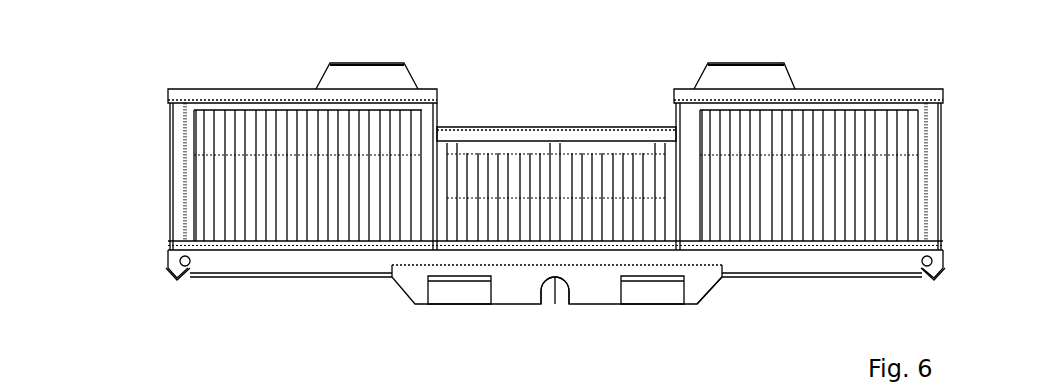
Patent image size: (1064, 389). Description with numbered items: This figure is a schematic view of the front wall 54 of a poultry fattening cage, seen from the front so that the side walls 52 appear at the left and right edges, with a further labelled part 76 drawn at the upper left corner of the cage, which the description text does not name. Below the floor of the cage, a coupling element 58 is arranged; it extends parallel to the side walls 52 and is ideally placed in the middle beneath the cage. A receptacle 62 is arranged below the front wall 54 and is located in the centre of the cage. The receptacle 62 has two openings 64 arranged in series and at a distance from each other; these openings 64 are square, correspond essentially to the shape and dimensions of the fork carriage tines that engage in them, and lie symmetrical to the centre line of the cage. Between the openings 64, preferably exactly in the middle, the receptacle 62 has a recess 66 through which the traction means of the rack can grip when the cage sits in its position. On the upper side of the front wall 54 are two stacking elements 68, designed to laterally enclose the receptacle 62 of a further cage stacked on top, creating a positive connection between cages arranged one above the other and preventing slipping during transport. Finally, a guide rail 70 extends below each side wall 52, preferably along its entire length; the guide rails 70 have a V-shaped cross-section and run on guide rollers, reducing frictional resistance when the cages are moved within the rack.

The side wall 52 is at (957, 234).
The front wall 54 is at (888, 147).
The coupling element 58 is at (553, 300).
The receptacle 62 is at (706, 300).
The openings 64 is at (457, 292).
The recess of receptacle 66 is at (560, 305).
The stacking elements 68 is at (393, 75).
The guide rail 70 is at (175, 268).
The side wall panel 76 is at (170, 105).